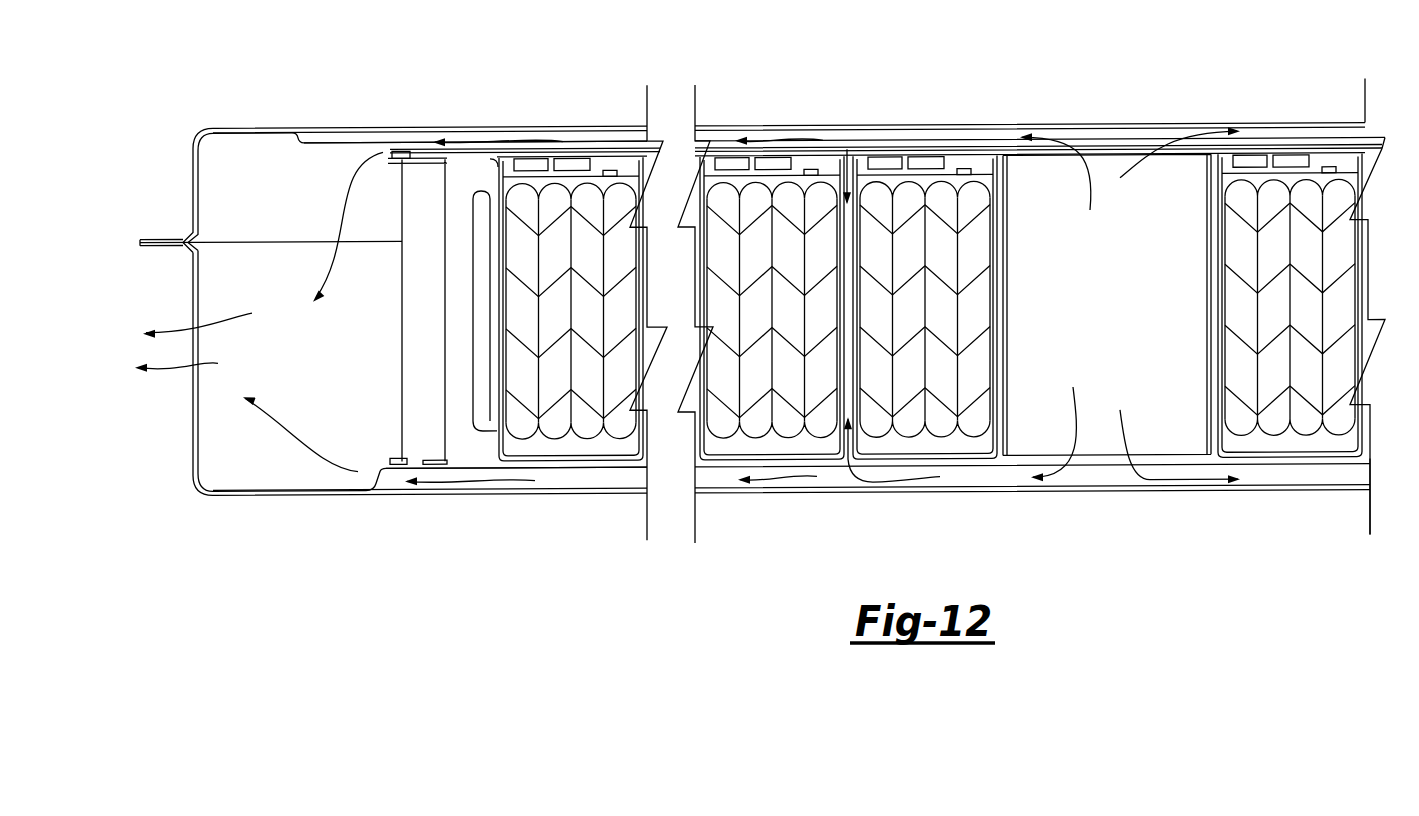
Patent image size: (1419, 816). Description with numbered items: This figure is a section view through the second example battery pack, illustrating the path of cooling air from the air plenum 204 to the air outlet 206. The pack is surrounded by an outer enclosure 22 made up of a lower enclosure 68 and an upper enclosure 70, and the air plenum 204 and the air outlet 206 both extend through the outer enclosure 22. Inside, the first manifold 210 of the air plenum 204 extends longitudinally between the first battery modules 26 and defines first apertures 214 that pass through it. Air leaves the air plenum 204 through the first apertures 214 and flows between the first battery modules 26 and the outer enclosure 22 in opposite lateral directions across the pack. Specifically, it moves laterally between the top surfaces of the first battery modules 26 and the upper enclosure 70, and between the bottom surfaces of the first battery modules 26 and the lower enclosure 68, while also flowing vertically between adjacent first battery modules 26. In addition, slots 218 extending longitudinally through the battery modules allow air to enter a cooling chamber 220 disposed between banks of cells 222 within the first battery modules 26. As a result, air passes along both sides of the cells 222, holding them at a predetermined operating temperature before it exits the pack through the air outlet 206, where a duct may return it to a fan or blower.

The outer enclosure 22 is at (366, 121).
The first battery modules 26 is at (587, 144).
The lower enclosure 68 is at (257, 494).
The upper enclosure 70 is at (248, 124).
The air plenum 204 is at (1131, 100).
The air outlet 206 is at (197, 400).
The first manifold 210 is at (1128, 319).
The first apertures 214 is at (1071, 159).
The slots 218 is at (847, 150).
The cooling chamber 220 is at (845, 318).
The cells 222 is at (553, 437).